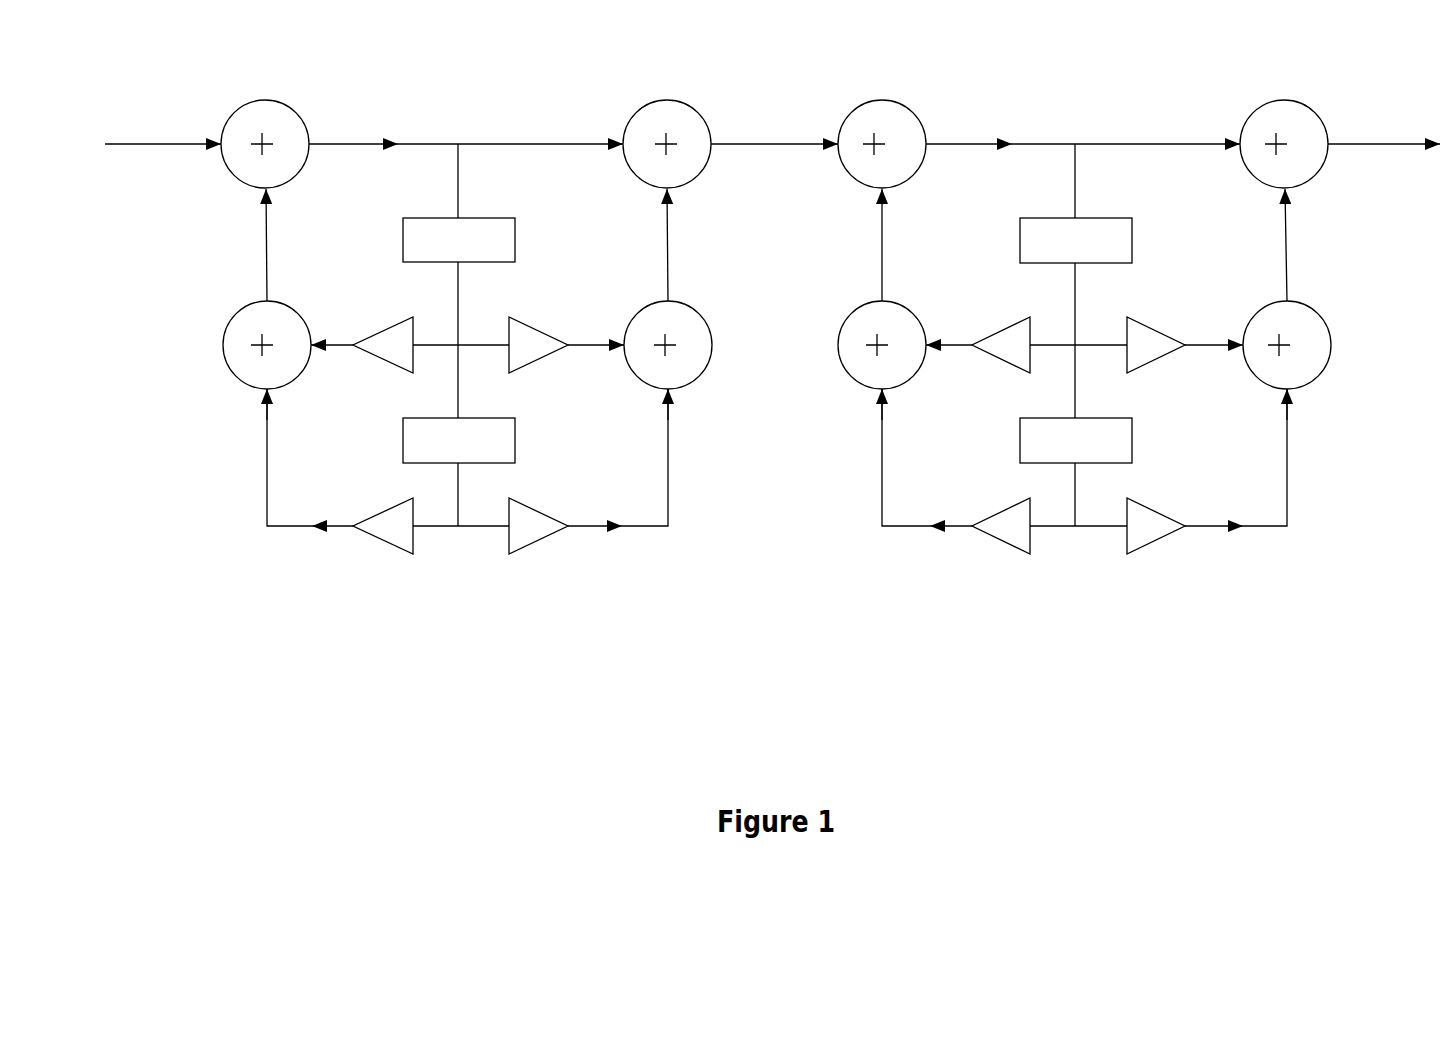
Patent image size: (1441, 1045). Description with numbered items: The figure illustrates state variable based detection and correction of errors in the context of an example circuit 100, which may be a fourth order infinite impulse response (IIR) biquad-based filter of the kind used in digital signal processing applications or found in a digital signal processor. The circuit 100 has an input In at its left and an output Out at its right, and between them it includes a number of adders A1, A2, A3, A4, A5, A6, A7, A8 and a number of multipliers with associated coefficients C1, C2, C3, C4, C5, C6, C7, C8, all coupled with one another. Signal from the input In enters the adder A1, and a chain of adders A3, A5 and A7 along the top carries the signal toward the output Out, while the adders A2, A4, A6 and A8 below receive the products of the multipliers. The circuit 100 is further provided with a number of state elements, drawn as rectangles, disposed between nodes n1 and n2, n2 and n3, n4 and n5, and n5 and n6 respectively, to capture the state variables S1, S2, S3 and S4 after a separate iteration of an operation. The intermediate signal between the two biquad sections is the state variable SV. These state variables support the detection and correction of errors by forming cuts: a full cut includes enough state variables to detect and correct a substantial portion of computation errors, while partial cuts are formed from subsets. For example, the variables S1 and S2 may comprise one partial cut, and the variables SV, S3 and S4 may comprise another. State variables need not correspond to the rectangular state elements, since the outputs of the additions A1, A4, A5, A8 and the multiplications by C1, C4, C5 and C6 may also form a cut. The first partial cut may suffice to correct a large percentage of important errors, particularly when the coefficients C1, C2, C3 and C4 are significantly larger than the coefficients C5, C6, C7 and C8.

The circuit 100 is at (768, 377).
The adder A1 is at (265, 117).
The adder A2 is at (226, 345).
The adder A3 is at (667, 117).
The adder A4 is at (686, 330).
The adder A5 is at (882, 117).
The adder A6 is at (857, 379).
The adder A7 is at (1284, 117).
The adder A8 is at (1319, 345).
The multiplier coefficient C1 is at (362, 322).
The multiplier coefficient C2 is at (566, 327).
The multiplier coefficient C3 is at (588, 471).
The multiplier coefficient C4 is at (340, 471).
The multiplier coefficient C5 is at (978, 322).
The multiplier coefficient C6 is at (1185, 322).
The multiplier coefficient C7 is at (1207, 471).
The multiplier coefficient C8 is at (956, 471).
The state variable S1 is at (462, 222).
The state variable S2 is at (462, 422).
The state variable S3 is at (1083, 222).
The state variable S4 is at (1076, 423).
The node n1 is at (456, 162).
The node n2 is at (461, 340).
The node n3 is at (461, 528).
The node n4 is at (1068, 164).
The node n5 is at (1078, 340).
The node n6 is at (1078, 516).
The input In is at (159, 116).
The output Out is at (1384, 116).
The state variable SV is at (774, 177).